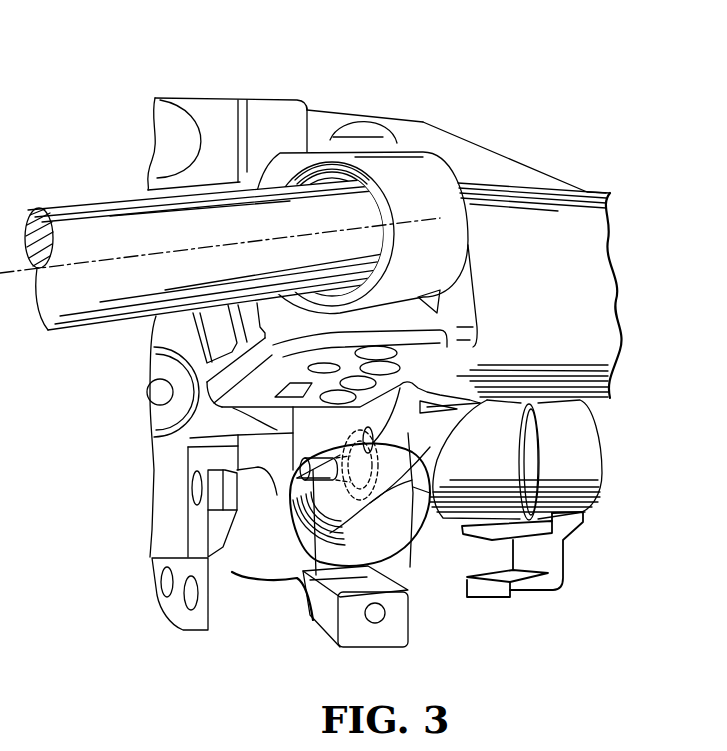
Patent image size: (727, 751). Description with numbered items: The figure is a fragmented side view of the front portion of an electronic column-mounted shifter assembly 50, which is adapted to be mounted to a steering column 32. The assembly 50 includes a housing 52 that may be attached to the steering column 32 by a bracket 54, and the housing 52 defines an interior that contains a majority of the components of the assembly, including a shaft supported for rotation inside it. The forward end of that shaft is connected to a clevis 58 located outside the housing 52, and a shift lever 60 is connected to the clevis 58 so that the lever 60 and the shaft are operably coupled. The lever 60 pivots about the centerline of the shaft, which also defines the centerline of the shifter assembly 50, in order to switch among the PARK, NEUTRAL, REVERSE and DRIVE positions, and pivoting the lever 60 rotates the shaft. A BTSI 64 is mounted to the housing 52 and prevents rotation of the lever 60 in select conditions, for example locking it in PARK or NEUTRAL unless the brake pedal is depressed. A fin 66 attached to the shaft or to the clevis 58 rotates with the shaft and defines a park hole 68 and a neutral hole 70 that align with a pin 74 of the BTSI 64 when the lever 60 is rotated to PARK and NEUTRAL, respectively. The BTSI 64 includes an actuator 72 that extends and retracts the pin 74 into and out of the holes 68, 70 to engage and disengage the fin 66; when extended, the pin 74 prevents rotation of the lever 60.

The electronic column-mounted shifter assembly 50 is at (517, 130).
The steering column 32 is at (325, 123).
The housing 52 is at (563, 290).
The bracket 54 is at (213, 120).
The clevis 58 is at (190, 438).
The shift lever 60 is at (100, 198).
The BTSI 64 is at (577, 452).
The fin 66 is at (393, 470).
The park hole 68 is at (313, 620).
The neutral hole 70 is at (475, 345).
The actuator 72 is at (487, 458).
The pin 74 is at (305, 467).